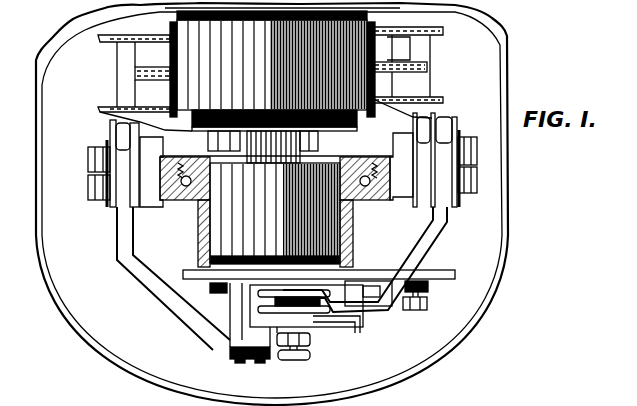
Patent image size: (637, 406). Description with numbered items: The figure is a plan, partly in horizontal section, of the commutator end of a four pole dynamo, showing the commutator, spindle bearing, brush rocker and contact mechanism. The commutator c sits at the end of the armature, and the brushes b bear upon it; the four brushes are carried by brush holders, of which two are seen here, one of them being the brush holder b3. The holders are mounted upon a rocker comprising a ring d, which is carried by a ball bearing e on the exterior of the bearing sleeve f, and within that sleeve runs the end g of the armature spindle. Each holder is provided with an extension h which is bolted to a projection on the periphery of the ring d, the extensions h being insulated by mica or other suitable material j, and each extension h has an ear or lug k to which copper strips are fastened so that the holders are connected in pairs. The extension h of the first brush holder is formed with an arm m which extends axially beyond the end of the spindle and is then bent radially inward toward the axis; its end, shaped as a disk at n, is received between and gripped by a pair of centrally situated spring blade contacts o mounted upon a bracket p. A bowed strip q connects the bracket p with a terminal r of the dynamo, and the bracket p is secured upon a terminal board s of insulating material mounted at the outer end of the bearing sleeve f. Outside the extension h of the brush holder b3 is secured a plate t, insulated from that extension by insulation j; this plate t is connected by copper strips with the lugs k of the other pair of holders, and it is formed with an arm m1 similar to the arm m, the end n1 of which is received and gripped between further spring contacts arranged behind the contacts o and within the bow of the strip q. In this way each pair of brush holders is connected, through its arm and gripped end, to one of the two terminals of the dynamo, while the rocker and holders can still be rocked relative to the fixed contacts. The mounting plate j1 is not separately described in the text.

The brushes b is at (123, 62).
The brush holder b3 is at (424, 81).
The commutator c is at (272, 71).
The ring d is at (166, 208).
The ball bearing e is at (275, 195).
The bearing sleeve f is at (198, 247).
The end of the armature spindle g is at (323, 137).
The extension h is at (122, 172).
The insulation j is at (137, 212).
The mounting plate j1 is at (455, 207).
The ear or lug k is at (118, 134).
The plate t is at (453, 144).
The arm m is at (141, 278).
The arm m1 is at (432, 246).
The disk n is at (295, 352).
The end of the arm n1 is at (252, 300).
The spring blade contacts o is at (252, 312).
The bracket p is at (232, 352).
The bowed strip q is at (361, 321).
The terminal r is at (428, 300).
The terminal board s is at (455, 274).